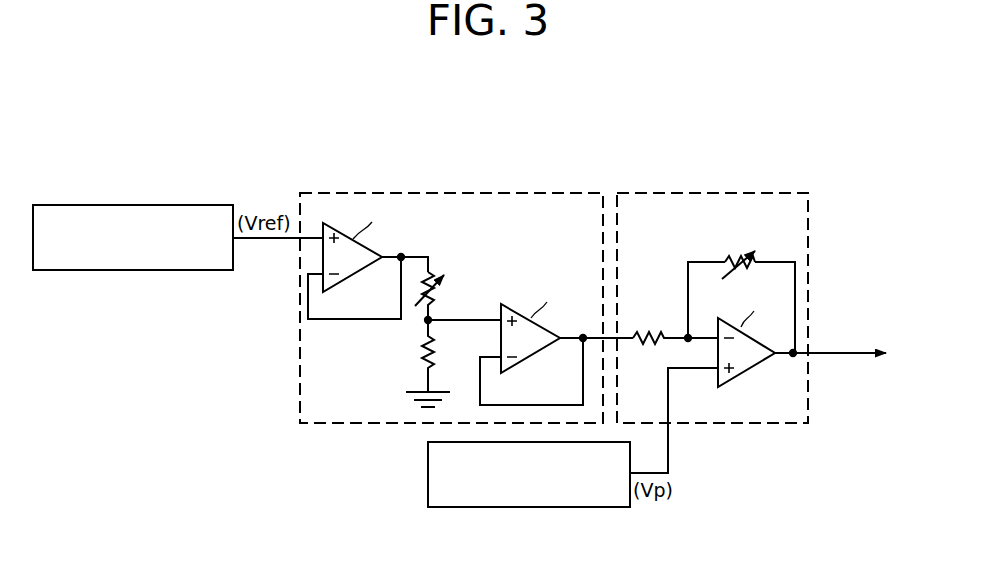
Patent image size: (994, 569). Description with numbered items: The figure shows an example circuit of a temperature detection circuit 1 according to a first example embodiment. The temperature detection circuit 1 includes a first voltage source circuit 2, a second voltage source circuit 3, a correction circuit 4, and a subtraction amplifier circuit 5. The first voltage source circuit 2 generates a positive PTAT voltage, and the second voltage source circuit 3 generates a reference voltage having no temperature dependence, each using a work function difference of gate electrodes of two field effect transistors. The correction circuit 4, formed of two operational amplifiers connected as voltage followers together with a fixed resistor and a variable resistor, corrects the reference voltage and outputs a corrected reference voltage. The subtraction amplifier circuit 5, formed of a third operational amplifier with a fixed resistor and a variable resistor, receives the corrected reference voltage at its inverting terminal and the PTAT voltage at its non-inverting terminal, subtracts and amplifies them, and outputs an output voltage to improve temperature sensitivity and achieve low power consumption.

The temperature detection circuit 1 is at (619, 163).
The first voltage source circuit 2 is at (597, 507).
The second voltage source circuit 3 is at (198, 270).
The correction circuit 4 is at (549, 192).
The subtraction amplifier circuit 5 is at (721, 192).